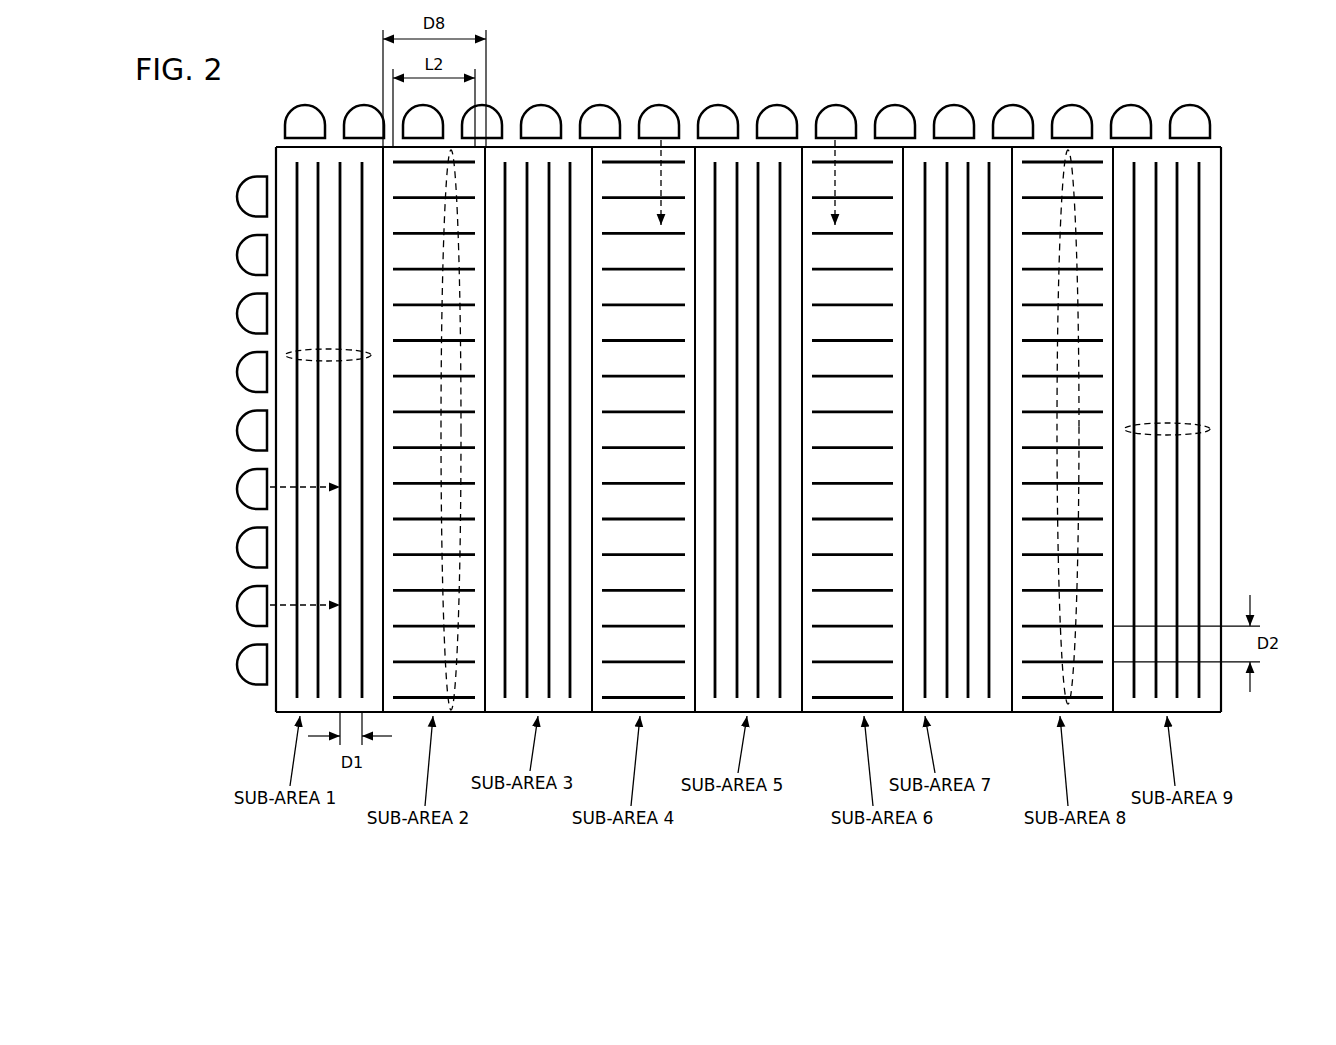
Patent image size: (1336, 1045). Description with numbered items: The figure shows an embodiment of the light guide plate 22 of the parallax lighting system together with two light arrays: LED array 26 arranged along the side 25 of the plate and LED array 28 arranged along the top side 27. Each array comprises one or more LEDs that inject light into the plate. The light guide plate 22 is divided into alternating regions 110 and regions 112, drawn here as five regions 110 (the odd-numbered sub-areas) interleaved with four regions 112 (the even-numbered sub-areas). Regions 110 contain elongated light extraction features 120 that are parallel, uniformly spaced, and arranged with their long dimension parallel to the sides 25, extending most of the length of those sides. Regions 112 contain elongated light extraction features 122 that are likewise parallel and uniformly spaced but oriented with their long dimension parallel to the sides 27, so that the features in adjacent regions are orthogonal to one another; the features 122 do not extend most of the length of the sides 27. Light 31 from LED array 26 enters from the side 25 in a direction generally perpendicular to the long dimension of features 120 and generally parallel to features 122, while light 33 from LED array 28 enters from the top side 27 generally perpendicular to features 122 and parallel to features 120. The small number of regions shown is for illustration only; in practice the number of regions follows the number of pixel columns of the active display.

The light guide plate 22 is at (1224, 93).
The sides 25 is at (276, 699).
The LED array 26 is at (237, 243).
The sides 27 is at (928, 147).
The LED array 28 is at (1148, 112).
The light 31 is at (288, 487).
The light 33 is at (660, 185).
The regions 110 is at (334, 157).
The regions 112 is at (629, 152).
The light extraction features 120 is at (285, 355).
The light extraction features 122 is at (1068, 140).